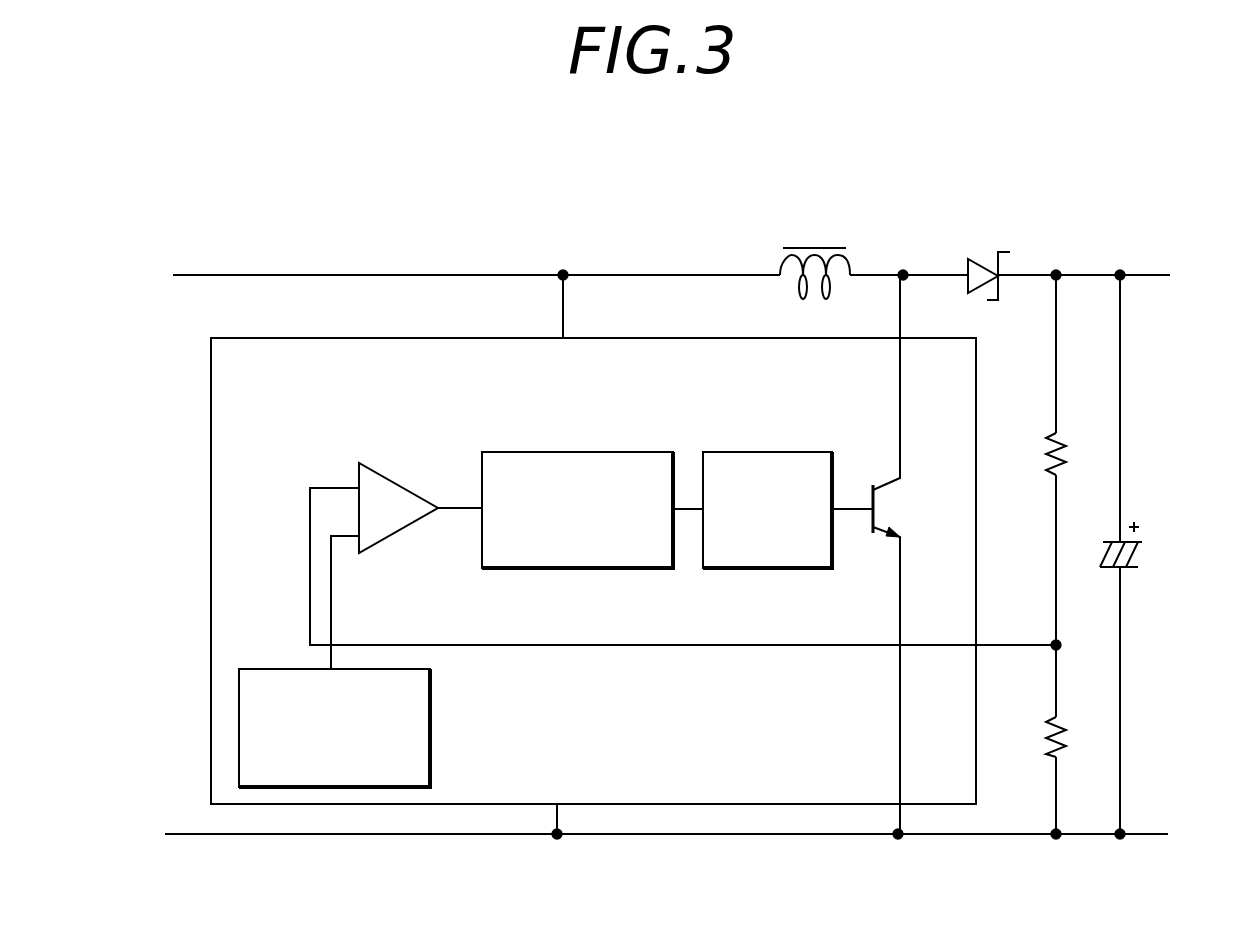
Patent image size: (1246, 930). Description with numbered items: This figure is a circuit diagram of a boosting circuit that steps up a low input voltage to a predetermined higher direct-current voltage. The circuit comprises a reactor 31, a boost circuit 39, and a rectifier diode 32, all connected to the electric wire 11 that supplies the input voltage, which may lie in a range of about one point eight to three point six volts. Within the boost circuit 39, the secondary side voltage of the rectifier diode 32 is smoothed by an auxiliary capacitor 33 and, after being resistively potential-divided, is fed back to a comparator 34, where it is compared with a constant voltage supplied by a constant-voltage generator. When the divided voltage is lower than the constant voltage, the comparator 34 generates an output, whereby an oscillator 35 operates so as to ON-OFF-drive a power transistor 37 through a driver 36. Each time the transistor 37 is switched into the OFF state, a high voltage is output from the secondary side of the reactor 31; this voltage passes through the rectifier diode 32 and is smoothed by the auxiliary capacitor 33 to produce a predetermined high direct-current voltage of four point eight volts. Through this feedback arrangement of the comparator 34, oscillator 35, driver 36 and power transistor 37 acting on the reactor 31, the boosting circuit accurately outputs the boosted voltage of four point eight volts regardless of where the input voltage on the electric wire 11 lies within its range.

The electric wire 11 is at (505, 275).
The reactor 31 is at (822, 242).
The rectifier diode 32 is at (996, 250).
The auxiliary capacitor 33 is at (1152, 563).
The comparator 34 is at (408, 482).
The oscillator 35 is at (620, 452).
The driver 36 is at (793, 450).
The power transistor 37 is at (898, 512).
The boost circuit 39 is at (211, 490).